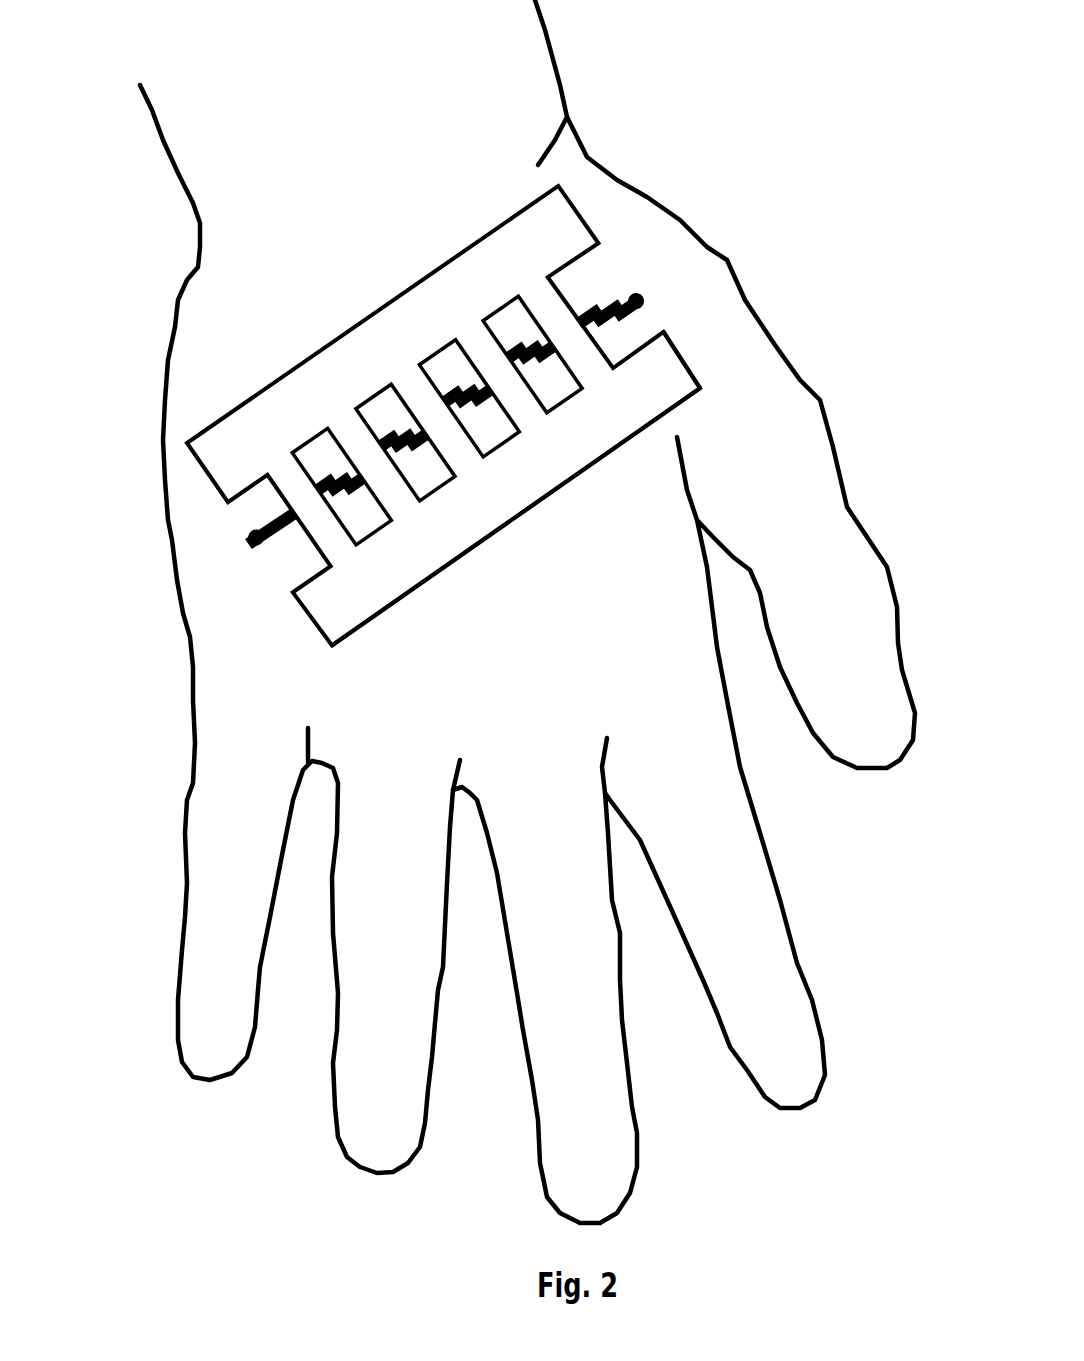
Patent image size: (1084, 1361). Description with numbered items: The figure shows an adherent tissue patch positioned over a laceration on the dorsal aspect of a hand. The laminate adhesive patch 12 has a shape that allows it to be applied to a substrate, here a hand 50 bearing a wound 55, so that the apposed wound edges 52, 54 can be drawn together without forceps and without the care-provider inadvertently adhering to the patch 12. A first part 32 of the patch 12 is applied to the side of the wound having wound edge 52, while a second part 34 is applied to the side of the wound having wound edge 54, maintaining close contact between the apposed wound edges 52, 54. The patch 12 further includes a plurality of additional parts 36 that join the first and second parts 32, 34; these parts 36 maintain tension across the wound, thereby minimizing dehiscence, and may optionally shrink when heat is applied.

The laminate adhesive patch 12 is at (393, 236).
The first part 32 is at (465, 324).
The second part 34 is at (805, 355).
The plurality of parts 36 is at (516, 541).
The hand 50 is at (190, 650).
The wound edge 52 is at (624, 284).
The wound edge 54 is at (647, 305).
The wound 55 is at (709, 212).